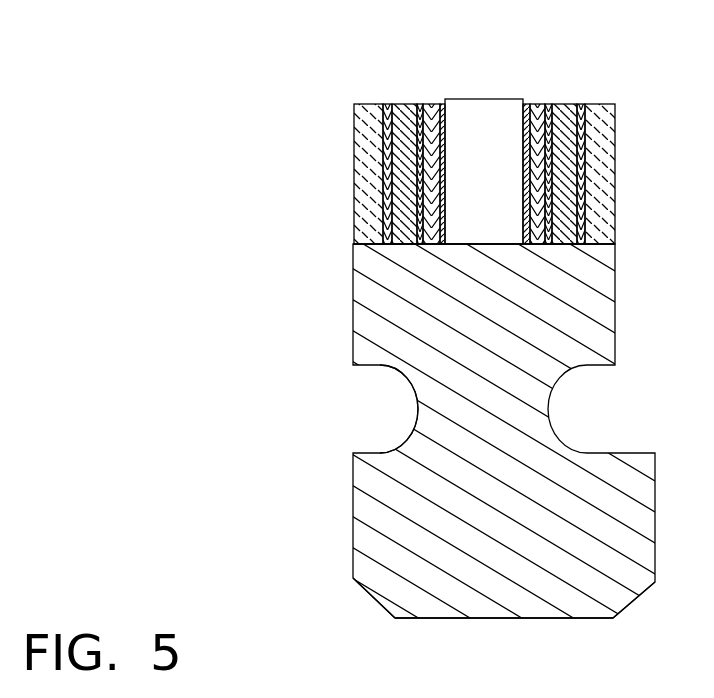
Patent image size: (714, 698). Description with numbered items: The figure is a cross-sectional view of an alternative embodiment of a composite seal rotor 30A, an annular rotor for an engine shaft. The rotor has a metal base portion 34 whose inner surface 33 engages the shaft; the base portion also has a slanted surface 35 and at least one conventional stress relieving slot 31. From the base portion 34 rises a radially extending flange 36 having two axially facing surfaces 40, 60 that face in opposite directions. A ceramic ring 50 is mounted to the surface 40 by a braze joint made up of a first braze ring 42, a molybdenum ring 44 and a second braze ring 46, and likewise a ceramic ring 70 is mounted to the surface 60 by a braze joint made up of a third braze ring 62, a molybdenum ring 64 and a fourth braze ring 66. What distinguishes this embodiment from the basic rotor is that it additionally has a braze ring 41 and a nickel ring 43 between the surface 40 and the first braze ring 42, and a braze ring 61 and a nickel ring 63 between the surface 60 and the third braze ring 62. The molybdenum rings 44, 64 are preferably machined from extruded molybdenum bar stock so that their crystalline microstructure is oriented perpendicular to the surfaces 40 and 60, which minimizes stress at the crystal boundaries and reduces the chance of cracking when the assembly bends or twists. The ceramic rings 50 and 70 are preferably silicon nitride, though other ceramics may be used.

The alternative embodiment seal rotor 30A is at (458, 402).
The stress relieving slot 31 is at (408, 383).
The inner surface 33 is at (457, 619).
The metal base portion 34 is at (475, 490).
The slanted surface 35 is at (365, 589).
The radially extending flange 36 is at (468, 221).
The axially facing surface 40 is at (446, 100).
The braze ring 41 is at (447, 148).
The first braze ring 42 is at (420, 104).
The nickel ring 43 is at (430, 104).
The molybdenum ring 44 is at (407, 104).
The second braze ring 46 is at (387, 104).
The ceramic ring 50 is at (362, 136).
The axially facing surface 60 is at (525, 104).
The braze ring 61 is at (483, 110).
The third braze ring 62 is at (549, 104).
The nickel ring 63 is at (539, 104).
The molybdenum ring 64 is at (564, 104).
The fourth braze ring 66 is at (581, 104).
The ceramic ring 70 is at (605, 130).